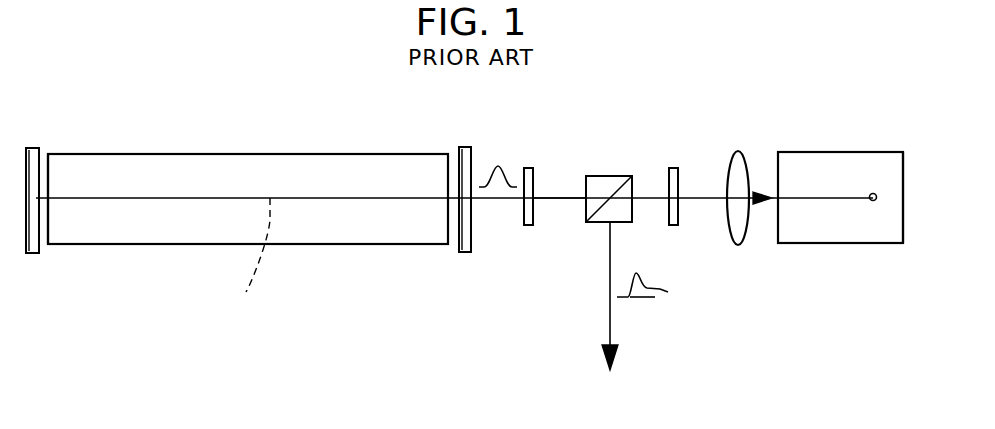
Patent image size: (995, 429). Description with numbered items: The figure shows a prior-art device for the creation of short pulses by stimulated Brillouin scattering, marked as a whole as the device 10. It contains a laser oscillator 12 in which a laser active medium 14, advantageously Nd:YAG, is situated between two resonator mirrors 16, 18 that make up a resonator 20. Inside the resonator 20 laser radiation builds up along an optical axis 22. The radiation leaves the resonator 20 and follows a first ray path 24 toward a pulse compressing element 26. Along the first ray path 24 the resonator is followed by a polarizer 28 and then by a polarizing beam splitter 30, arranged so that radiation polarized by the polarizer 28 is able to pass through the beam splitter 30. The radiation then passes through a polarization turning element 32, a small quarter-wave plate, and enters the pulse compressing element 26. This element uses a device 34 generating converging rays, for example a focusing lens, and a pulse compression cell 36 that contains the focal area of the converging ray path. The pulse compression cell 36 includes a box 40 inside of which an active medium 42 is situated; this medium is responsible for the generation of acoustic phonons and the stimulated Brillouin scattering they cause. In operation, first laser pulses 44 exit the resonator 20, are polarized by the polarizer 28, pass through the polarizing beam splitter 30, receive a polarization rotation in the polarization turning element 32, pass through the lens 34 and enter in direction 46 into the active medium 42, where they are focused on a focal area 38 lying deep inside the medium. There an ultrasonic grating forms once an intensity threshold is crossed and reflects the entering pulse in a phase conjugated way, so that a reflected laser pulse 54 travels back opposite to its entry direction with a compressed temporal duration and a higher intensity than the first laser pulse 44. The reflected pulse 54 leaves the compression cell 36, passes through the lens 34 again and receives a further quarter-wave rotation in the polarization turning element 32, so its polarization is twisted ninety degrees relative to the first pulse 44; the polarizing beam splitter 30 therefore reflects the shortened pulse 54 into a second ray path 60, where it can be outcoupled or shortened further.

The device for the creation of short pulses 10 is at (230, 148).
The laser oscillator 12 is at (96, 154).
The laser active medium 14 is at (336, 160).
The resonator mirror 16 is at (32, 150).
The resonator mirror 18 is at (465, 150).
The resonator 20 is at (190, 255).
The optical axis 22 is at (243, 251).
The first ray path 24 is at (562, 200).
The pulse compressing element 26 is at (801, 148).
The polarizer 28 is at (528, 170).
The polarizing beam splitter 30 is at (606, 178).
The polarization turning element 32 is at (672, 170).
The device generating converging rays 34 is at (735, 152).
The pulse compression cell 36 is at (849, 147).
The focal area 38 is at (873, 192).
The box 40 is at (816, 244).
The active medium 42 is at (850, 233).
The first laser pulse 44 is at (497, 163).
The direction of entry 46 is at (767, 206).
The reflected phase conjugated laser pulse 54 is at (668, 292).
The second ray path 60 is at (610, 322).